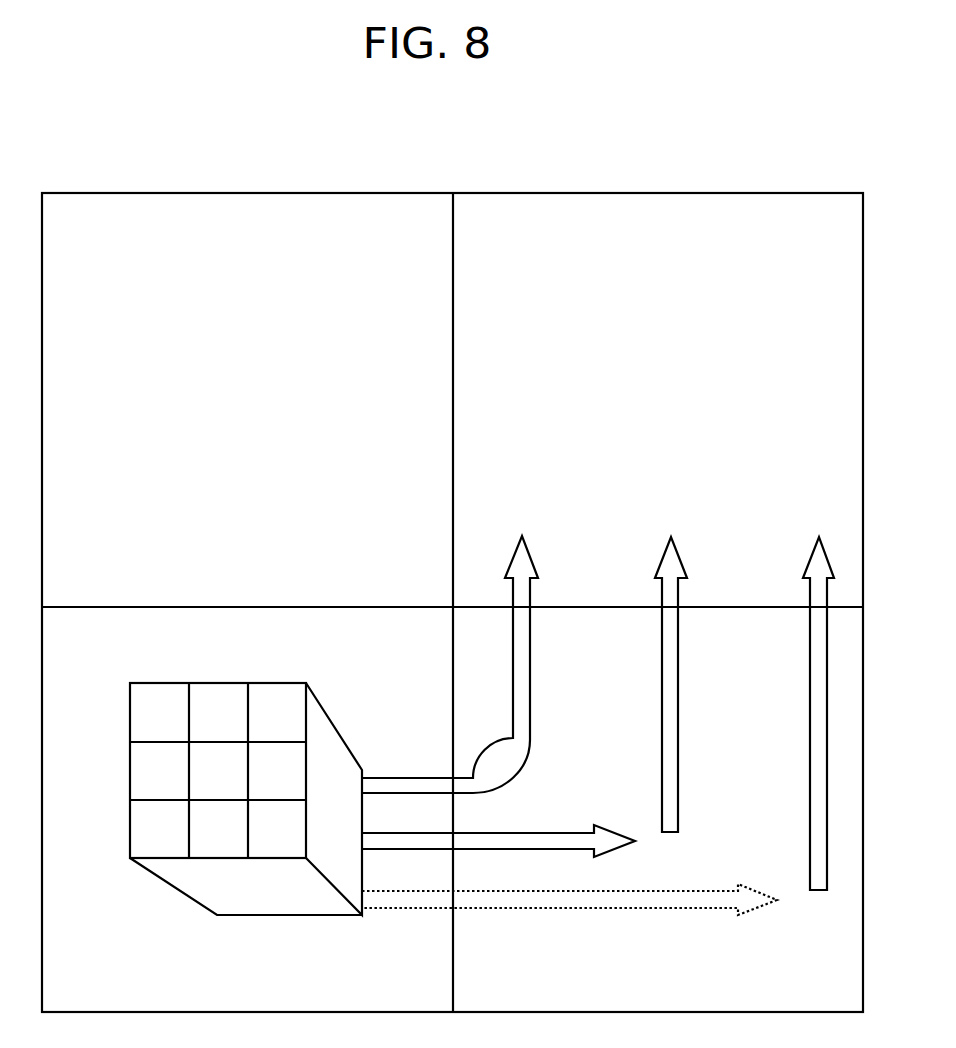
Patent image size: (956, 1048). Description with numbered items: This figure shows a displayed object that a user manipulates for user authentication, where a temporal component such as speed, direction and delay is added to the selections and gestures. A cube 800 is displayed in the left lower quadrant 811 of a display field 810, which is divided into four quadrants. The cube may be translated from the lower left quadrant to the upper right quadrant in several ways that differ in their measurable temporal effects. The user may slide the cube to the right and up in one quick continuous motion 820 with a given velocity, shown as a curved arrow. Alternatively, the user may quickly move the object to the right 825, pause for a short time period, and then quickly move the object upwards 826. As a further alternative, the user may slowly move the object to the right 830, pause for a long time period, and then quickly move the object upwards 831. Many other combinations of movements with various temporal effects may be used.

The cube 800 is at (130, 722).
The display field 810 is at (142, 193).
The left lower quadrant 811 is at (120, 987).
The quick continuous motion 820 is at (512, 655).
The quick move to the right 825 is at (500, 833).
The quick move upwards 826 is at (660, 690).
The slow move to the right 830 is at (584, 908).
The quick move upwards after long pause 831 is at (808, 702).